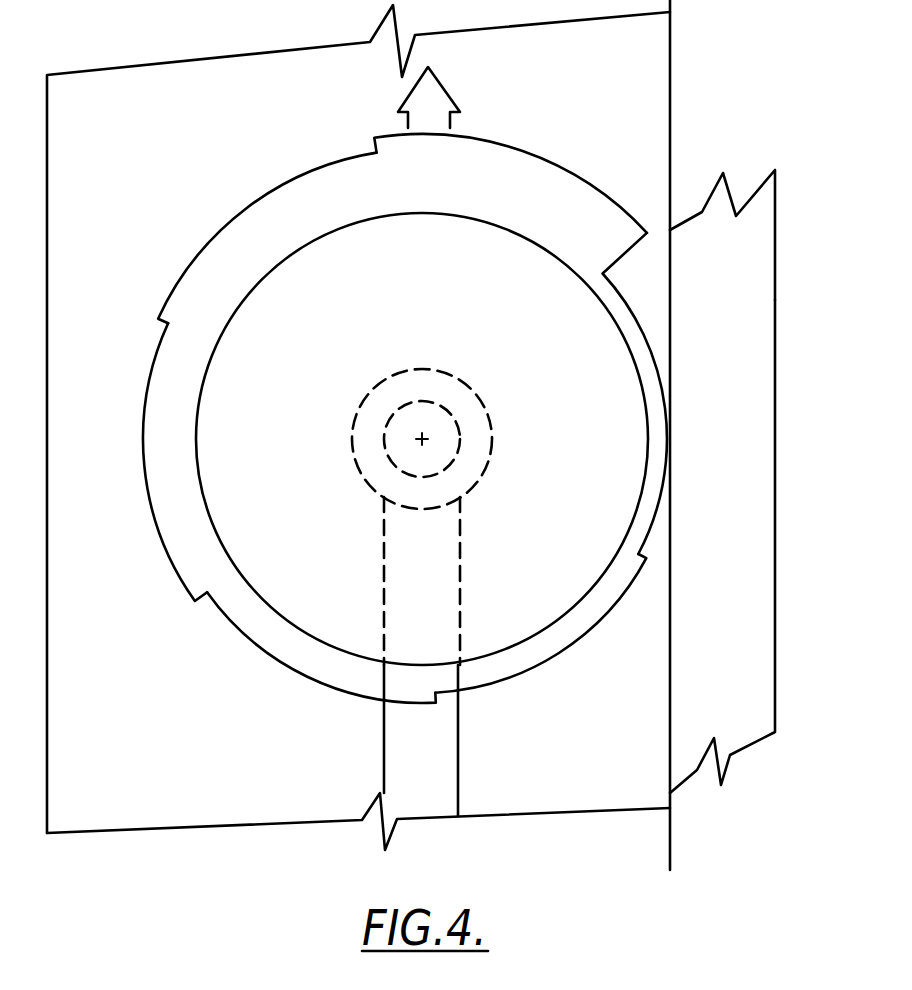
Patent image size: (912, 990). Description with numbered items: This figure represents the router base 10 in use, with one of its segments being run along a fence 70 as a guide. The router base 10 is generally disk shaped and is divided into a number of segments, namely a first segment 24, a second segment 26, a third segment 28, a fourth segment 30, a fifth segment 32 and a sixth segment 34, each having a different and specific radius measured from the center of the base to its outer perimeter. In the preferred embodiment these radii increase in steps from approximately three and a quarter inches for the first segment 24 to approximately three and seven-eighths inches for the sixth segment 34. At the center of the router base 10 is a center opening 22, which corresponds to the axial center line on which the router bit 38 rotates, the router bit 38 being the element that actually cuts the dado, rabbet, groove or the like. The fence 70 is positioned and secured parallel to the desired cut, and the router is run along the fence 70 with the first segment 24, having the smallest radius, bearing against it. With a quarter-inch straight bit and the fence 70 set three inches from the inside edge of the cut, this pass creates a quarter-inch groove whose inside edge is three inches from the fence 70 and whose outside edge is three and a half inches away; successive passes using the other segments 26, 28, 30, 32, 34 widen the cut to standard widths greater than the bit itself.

The router base 10 is at (200, 235).
The center opening 22 is at (468, 386).
The first segment 24 is at (635, 393).
The second segment 26 is at (540, 629).
The third segment 28 is at (321, 655).
The fourth segment 30 is at (148, 462).
The fifth segment 32 is at (267, 238).
The sixth segment 34 is at (510, 173).
The router bit 38 is at (415, 400).
The fence 70 is at (759, 218).